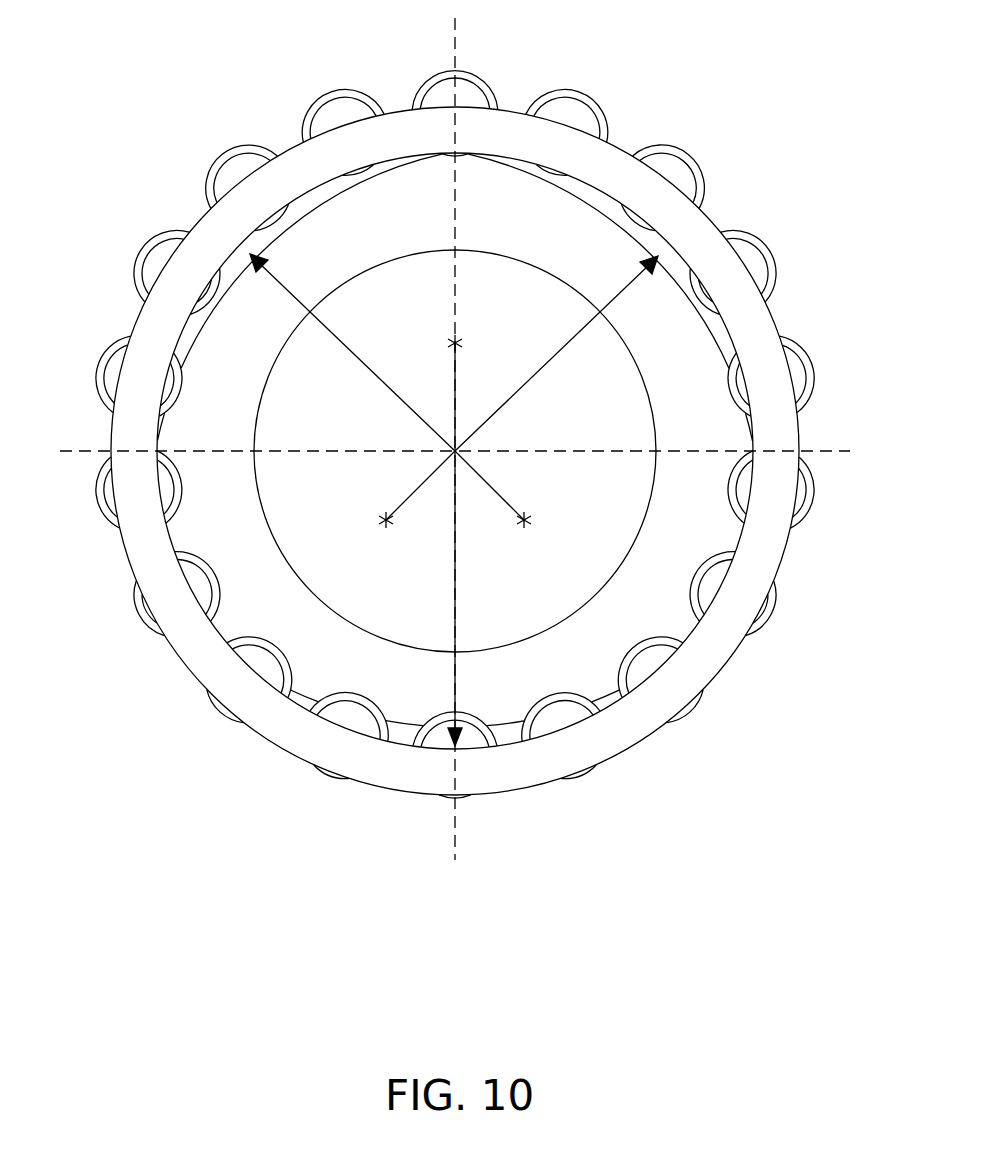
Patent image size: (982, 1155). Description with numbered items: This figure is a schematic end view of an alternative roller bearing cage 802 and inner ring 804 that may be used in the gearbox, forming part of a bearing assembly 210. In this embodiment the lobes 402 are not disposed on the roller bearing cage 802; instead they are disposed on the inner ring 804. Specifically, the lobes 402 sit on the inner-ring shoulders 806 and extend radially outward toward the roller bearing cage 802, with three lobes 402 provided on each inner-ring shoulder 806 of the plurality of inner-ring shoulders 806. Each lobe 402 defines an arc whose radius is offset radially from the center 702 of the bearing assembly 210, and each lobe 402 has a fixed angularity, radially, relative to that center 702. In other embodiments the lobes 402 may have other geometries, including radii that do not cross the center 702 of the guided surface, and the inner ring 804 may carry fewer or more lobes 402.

The bearing assembly 210 is at (178, 90).
The lobes 402 is at (462, 152).
The center 702 is at (466, 451).
The roller bearing cage 802 is at (612, 172).
The inner ring 804 is at (596, 633).
The inner-ring shoulders 806 is at (660, 592).